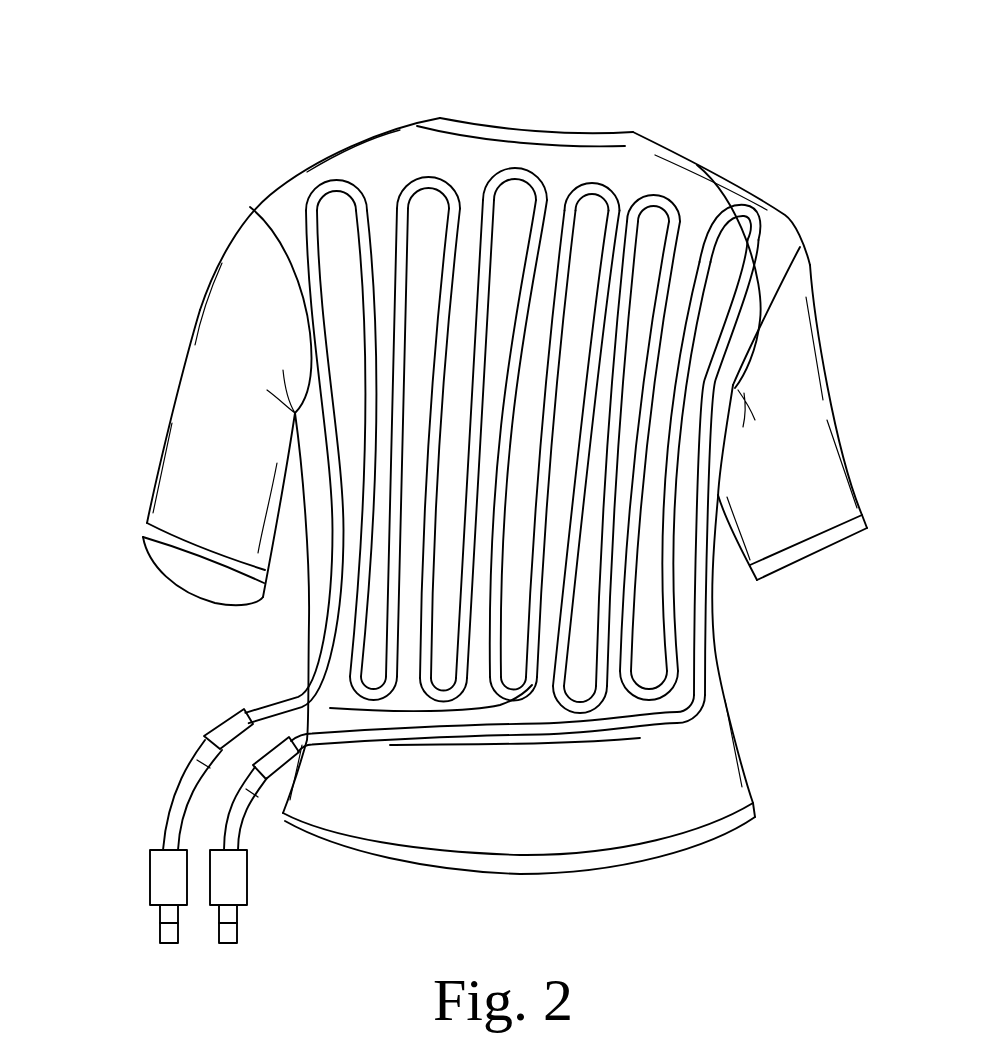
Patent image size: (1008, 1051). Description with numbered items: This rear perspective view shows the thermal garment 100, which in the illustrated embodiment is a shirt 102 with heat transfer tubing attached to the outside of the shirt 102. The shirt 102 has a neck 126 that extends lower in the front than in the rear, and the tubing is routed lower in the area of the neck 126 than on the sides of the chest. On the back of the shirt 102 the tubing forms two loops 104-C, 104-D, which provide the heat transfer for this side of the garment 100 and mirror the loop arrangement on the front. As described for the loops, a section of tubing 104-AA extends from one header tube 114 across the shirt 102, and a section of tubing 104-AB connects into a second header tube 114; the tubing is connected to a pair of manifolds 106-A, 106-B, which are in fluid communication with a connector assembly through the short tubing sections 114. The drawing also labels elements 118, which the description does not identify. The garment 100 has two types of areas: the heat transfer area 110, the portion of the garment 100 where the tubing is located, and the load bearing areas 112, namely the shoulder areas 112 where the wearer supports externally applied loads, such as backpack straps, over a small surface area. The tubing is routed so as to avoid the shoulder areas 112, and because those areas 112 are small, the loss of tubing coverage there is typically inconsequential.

The thermal garment 100 is at (160, 112).
The shirt 102 is at (200, 312).
The section of tubing 104-AA is at (530, 705).
The section of tubing 104-AB is at (640, 740).
The tubing loop 104-C is at (418, 179).
The tubing loop 104-D is at (678, 205).
The manifold 106-A is at (217, 722).
The manifold 106-B is at (291, 755).
The heat transfer area 110 is at (765, 628).
The shoulder areas 112 is at (322, 152).
The short tubing section 114 is at (168, 808).
The quick-disconnect fitting 118 is at (150, 882).
The neck 126 is at (533, 130).